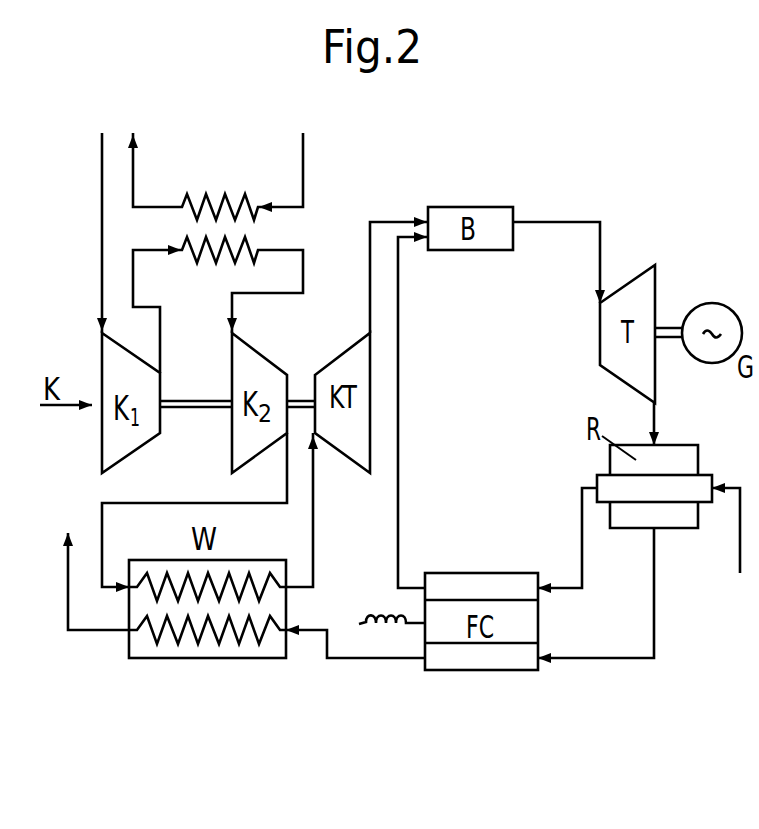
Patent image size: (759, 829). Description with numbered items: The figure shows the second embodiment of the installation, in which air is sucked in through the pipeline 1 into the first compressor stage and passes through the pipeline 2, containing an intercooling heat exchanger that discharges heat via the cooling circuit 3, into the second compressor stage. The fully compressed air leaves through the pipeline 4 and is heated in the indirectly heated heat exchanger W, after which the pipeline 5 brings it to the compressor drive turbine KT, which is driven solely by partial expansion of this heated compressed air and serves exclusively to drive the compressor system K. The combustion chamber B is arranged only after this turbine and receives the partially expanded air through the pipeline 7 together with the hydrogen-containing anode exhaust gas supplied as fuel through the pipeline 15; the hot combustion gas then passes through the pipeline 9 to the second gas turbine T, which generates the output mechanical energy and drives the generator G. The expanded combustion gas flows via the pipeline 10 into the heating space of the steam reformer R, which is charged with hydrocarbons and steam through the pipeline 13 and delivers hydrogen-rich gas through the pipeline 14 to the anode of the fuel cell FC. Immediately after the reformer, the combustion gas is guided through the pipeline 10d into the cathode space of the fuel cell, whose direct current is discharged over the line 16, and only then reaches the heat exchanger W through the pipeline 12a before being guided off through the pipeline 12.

The pipeline 1 is at (95, 233).
The pipeline 2 is at (218, 305).
The cooling circuit 3 is at (225, 176).
The pipeline 4 is at (194, 512).
The pipeline 5 is at (309, 510).
The pipeline 7 is at (389, 275).
The fuel gas line to turbine 9 is at (559, 262).
The pipeline 10 is at (667, 422).
The pipeline 10d is at (619, 595).
The pipeline 12 is at (96, 601).
The pipeline 12a is at (355, 662).
The pipeline 13 is at (723, 530).
The pipeline 14 is at (571, 540).
The pipeline 15 is at (412, 410).
The line 16 is at (381, 635).